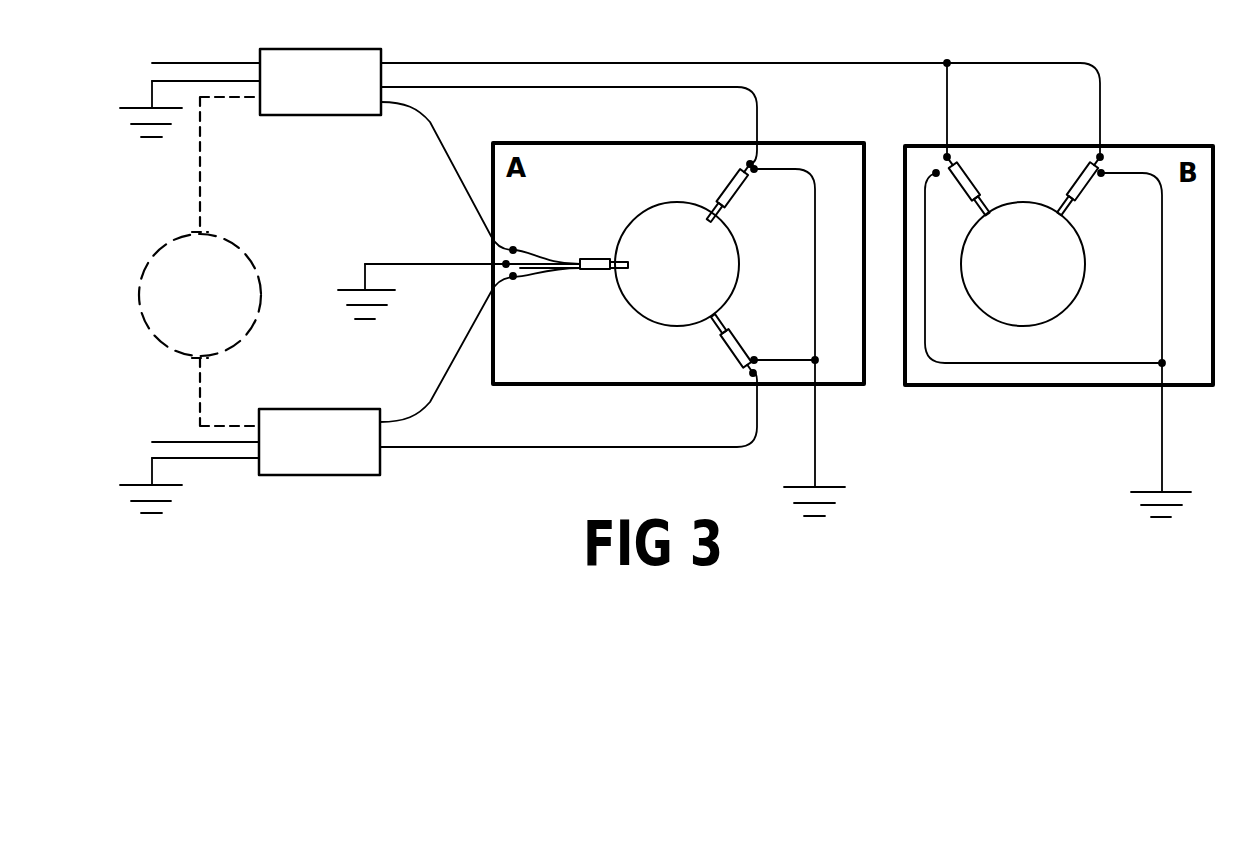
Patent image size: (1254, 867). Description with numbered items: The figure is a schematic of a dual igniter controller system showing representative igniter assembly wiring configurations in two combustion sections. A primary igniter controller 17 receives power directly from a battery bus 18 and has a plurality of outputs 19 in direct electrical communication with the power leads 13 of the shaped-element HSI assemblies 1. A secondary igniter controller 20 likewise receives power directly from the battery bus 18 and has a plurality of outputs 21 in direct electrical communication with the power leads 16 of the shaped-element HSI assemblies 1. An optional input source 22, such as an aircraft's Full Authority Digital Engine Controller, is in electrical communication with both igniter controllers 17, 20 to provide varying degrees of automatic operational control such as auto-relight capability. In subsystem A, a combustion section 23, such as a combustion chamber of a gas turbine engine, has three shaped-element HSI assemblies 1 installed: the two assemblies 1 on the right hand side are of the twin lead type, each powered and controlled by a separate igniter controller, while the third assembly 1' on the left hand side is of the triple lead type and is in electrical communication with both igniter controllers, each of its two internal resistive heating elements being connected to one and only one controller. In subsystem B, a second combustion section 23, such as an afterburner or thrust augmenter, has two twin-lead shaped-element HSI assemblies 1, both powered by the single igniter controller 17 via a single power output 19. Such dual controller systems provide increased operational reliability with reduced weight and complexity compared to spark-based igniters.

The shaped-element HSI assembly 1 is at (916, 265).
The counter electrode 1' is at (601, 284).
The power leads 13 is at (563, 253).
The power leads 16 is at (568, 275).
The primary igniter controller 17 is at (320, 82).
The battery bus 18 is at (203, 247).
The outputs 19 is at (442, 150).
The secondary igniter controller 20 is at (319, 442).
The outputs 21 is at (503, 445).
The input source 22 is at (200, 261).
The combustion section 23 is at (850, 264).